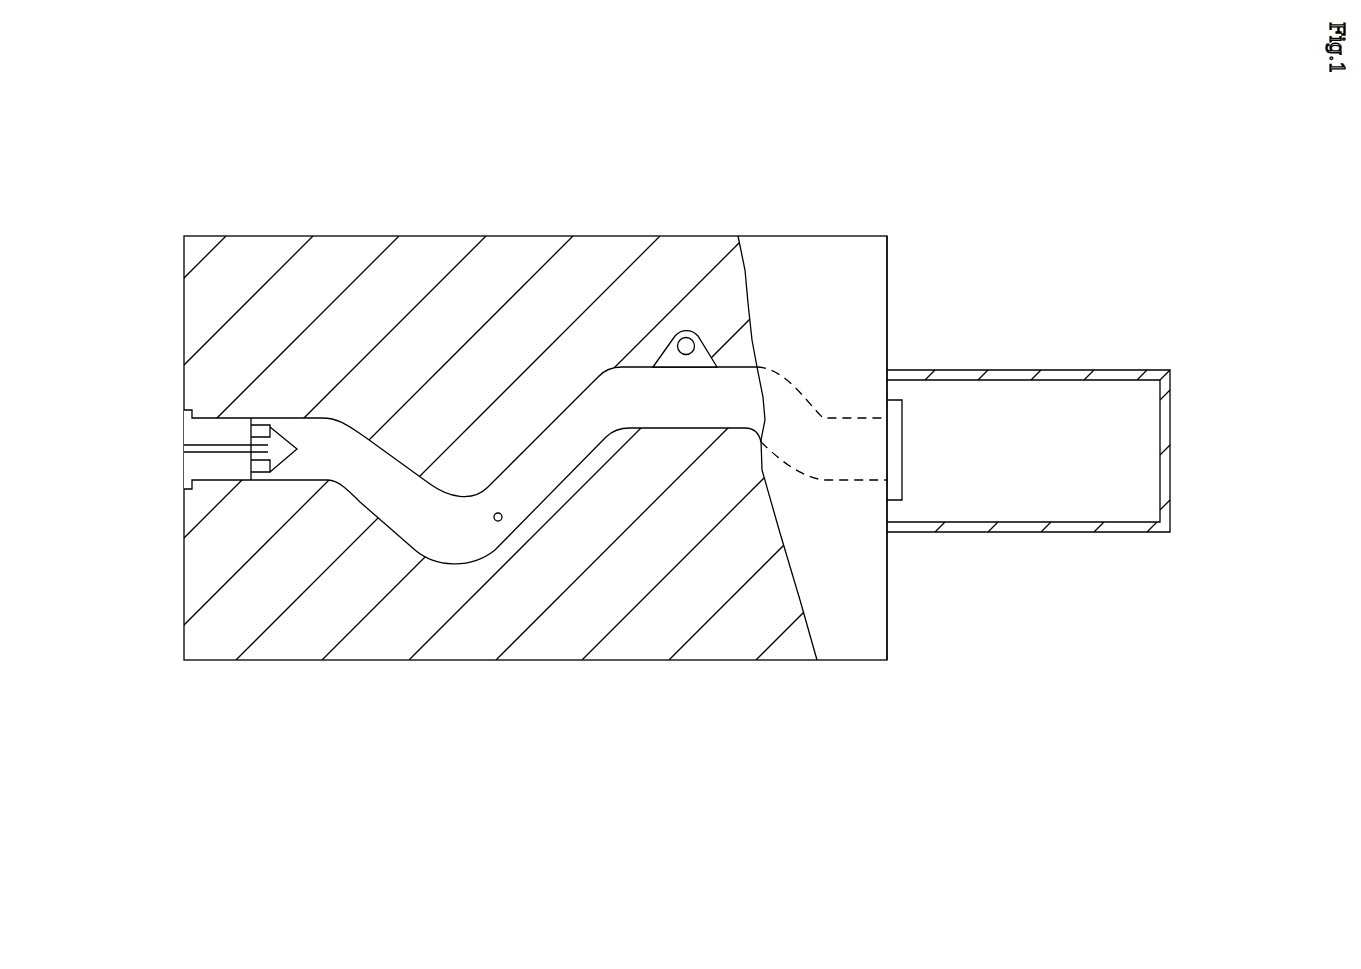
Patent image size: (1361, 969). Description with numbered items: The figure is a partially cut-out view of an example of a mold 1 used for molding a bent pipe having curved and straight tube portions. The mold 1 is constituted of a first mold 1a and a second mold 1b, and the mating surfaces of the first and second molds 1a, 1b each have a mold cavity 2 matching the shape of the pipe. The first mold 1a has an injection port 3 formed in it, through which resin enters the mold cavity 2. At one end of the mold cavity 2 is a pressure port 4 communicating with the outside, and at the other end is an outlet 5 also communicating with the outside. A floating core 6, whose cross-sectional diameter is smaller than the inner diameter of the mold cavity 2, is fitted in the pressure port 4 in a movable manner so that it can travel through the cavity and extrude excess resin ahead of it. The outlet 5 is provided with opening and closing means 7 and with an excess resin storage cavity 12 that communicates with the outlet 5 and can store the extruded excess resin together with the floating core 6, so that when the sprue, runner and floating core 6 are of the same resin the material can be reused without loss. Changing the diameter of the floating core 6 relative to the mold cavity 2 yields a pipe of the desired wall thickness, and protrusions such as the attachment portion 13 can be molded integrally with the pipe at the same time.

The mold 1 is at (725, 127).
The first mold 1a is at (693, 255).
The second mold 1b is at (782, 255).
The mold cavity 2 is at (566, 447).
The injection port 3 is at (495, 522).
The pressure port 4 is at (210, 462).
The outlet 5 is at (887, 450).
The floating core 6 is at (272, 430).
The opening and closing means 7 is at (895, 488).
The excess resin storage cavity 12 is at (1133, 457).
The attachment portion 13 is at (681, 339).